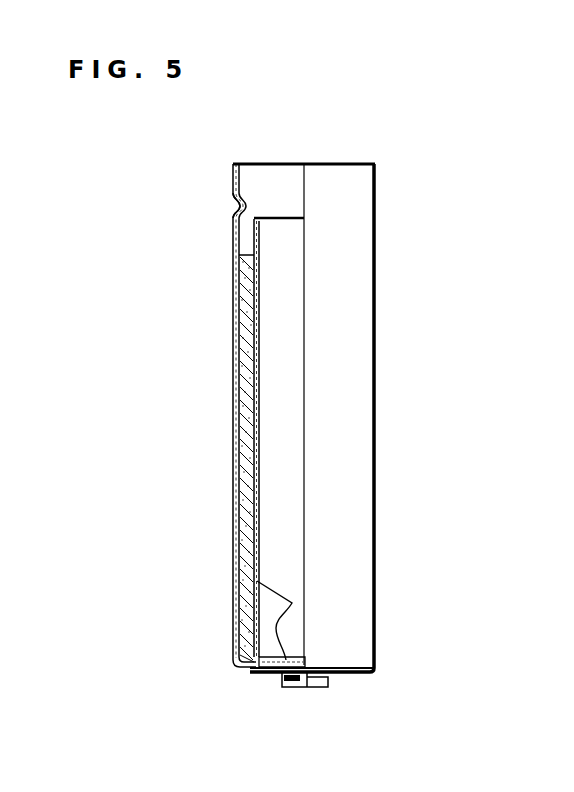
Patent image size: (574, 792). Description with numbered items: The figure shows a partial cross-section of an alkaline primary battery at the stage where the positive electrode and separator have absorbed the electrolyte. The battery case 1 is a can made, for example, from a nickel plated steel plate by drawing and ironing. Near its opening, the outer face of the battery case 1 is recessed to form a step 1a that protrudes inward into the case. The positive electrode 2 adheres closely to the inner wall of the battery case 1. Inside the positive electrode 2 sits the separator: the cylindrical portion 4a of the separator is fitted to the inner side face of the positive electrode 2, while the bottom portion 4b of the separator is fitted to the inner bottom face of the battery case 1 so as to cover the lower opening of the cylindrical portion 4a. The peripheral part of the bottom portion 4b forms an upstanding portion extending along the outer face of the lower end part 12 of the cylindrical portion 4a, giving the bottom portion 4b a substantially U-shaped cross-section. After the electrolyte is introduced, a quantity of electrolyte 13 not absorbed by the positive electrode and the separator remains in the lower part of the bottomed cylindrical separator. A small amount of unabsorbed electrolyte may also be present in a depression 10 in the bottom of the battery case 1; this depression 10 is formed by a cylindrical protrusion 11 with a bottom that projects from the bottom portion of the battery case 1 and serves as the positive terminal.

The battery case 1 is at (238, 468).
The step 1a is at (235, 210).
The positive electrode 2 is at (237, 415).
The cylindrical portion of the separator 4a is at (246, 348).
The bottom portion of the separator 4b is at (262, 676).
The depression 10 is at (284, 681).
The cylindrical protrusion 11 is at (298, 688).
The lower end part of the cylindrical portion of the separator 12 is at (262, 642).
The electrolyte 13 is at (257, 581).